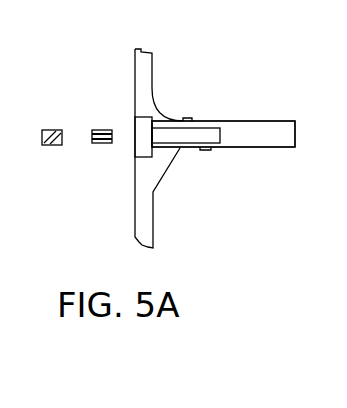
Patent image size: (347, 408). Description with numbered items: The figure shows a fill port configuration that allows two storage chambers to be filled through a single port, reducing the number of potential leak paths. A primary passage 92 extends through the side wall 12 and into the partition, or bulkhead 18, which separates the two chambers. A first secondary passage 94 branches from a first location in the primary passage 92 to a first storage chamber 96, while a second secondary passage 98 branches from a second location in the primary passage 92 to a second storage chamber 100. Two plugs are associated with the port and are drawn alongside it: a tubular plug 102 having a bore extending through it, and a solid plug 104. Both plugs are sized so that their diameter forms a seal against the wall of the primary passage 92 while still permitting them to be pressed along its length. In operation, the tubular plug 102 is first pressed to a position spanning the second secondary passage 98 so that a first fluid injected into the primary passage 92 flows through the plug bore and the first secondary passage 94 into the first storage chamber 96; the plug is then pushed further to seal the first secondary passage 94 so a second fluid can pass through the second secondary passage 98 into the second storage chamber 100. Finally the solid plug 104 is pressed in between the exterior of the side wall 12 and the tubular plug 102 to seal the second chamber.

The side wall 12 is at (146, 215).
The partition 18 is at (288, 123).
The primary passage 92 is at (172, 137).
The first secondary passage 94 is at (208, 152).
The first storage chamber 96 is at (270, 234).
The second secondary passage 98 is at (192, 118).
The second storage chamber 100 is at (273, 113).
The tubular plug 102 is at (98, 145).
The solid plug 104 is at (54, 126).